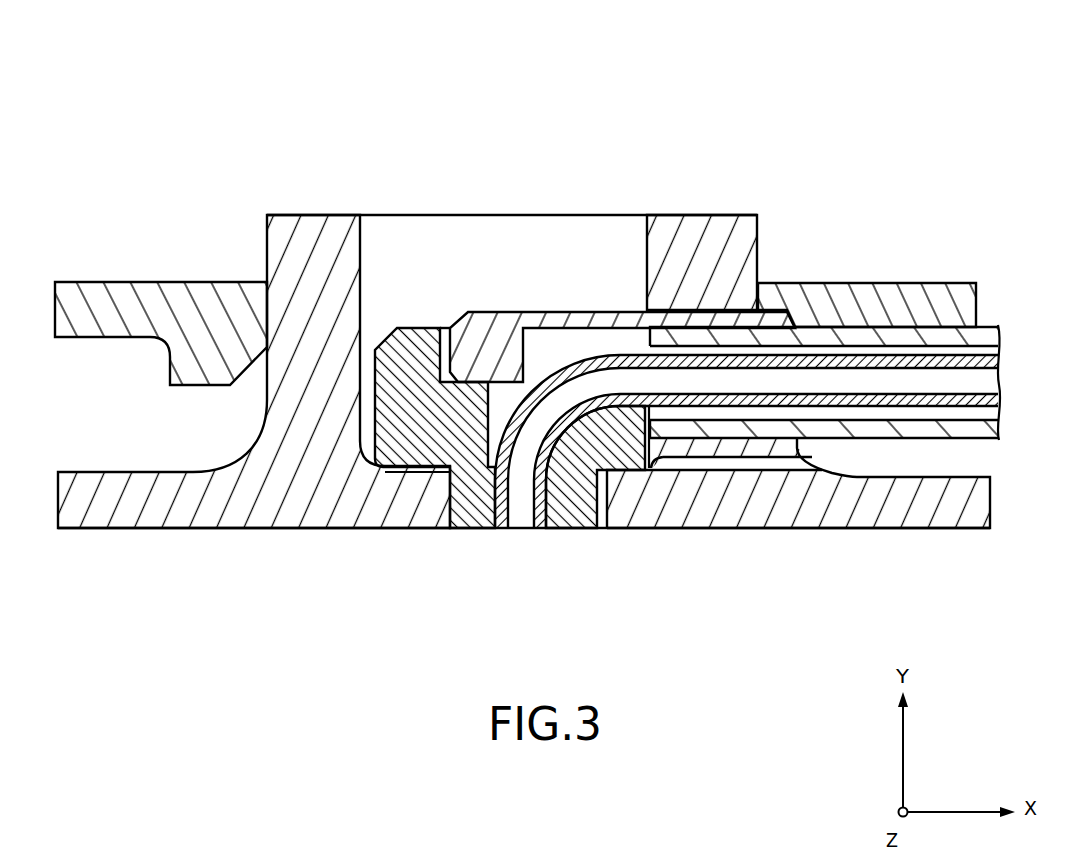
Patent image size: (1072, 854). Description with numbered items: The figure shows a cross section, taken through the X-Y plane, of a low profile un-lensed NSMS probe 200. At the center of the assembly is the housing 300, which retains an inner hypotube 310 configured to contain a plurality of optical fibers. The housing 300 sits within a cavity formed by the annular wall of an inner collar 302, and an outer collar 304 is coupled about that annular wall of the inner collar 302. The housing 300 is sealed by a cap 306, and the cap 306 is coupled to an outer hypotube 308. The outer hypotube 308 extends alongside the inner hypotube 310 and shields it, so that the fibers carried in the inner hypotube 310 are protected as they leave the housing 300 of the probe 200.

The probe 200 is at (709, 124).
The housing 300 is at (440, 441).
The inner collar 302 is at (318, 484).
The outer collar 304 is at (210, 334).
The cap 306 is at (472, 338).
The outer hypotube 308 is at (922, 337).
The inner hypotube 310 is at (984, 407).